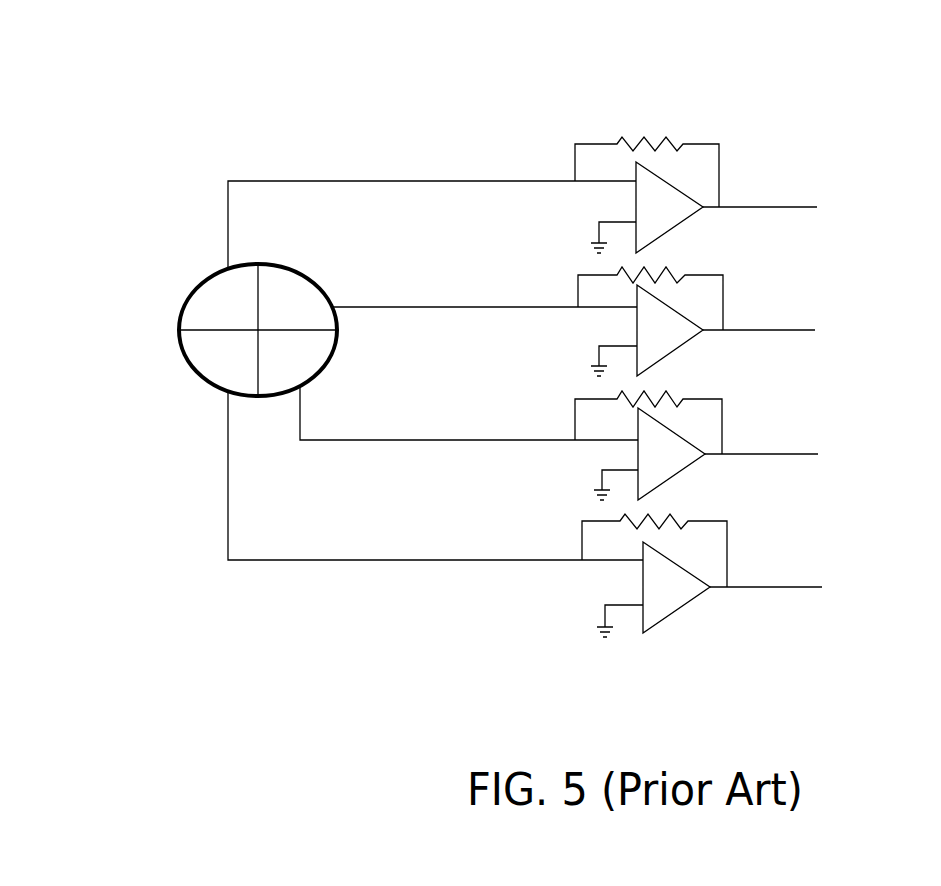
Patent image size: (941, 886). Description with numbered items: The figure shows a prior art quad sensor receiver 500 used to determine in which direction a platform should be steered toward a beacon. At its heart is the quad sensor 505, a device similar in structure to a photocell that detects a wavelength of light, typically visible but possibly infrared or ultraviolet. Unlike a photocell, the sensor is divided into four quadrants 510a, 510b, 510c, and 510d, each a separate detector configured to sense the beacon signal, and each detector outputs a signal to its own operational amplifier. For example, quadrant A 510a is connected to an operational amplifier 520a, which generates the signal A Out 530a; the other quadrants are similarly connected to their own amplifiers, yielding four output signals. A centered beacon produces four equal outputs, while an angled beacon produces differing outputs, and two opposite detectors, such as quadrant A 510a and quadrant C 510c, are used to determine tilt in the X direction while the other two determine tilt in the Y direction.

The quad sensor receiver 500 is at (222, 135).
The quad sensor 505 is at (188, 365).
The quadrant A 510a is at (207, 308).
The quadrant B 510b is at (305, 313).
The quadrant C 510c is at (308, 367).
The quadrant D 510d is at (227, 377).
The operational amplifier 520a is at (678, 226).
The A Out signal 530a is at (806, 208).